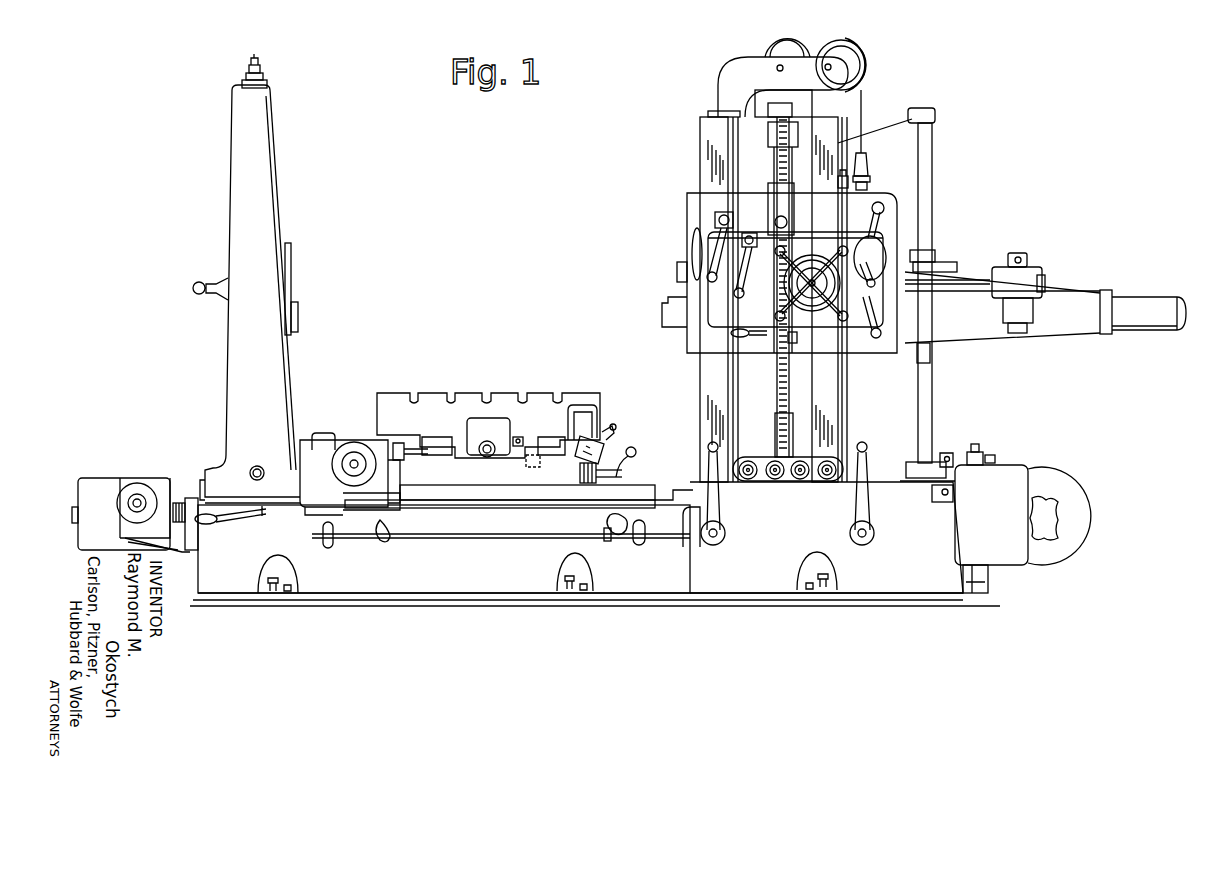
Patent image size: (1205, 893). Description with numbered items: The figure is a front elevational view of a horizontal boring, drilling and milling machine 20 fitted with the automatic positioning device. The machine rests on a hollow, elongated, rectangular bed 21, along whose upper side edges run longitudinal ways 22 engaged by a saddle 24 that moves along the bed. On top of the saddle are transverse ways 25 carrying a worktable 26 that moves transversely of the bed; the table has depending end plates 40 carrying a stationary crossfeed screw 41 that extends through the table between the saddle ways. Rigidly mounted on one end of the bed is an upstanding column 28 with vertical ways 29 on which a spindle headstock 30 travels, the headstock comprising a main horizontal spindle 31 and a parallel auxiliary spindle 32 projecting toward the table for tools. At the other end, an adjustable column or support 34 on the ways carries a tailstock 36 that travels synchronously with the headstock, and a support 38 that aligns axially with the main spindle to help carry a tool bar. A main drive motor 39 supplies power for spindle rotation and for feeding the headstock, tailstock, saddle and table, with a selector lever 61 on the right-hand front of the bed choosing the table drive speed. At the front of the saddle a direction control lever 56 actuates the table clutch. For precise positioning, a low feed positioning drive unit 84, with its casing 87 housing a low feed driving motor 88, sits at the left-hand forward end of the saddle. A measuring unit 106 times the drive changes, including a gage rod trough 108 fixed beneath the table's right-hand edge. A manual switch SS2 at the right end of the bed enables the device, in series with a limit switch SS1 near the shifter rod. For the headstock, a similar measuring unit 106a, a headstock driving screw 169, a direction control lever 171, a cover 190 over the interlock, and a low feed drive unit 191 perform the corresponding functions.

The machine 20 is at (338, 618).
The bed 21 is at (455, 583).
The ways 22 is at (648, 493).
The saddle 24 is at (468, 489).
The ways 25 is at (438, 446).
The worktable 26 is at (538, 393).
The column 28 is at (700, 389).
The ways 29 is at (706, 404).
The spindle headstock 30 is at (690, 214).
The main horizontal spindle 31 is at (666, 306).
The auxiliary spindle 32 is at (677, 270).
The column or support 34 is at (266, 181).
The tailstock 36 is at (292, 262).
The support 38 is at (299, 320).
The main drive motor 39 is at (1083, 498).
The end plates 40 is at (479, 418).
The crossfeed screw 41 is at (497, 438).
The direction control lever 56 is at (636, 453).
The selector lever 61 is at (867, 447).
The low feed positioning drive unit 84 is at (337, 438).
The casing 87 is at (312, 511).
The low feed driving motor 88 is at (334, 462).
The measuring unit 106 is at (610, 427).
The measuring unit 106a is at (764, 214).
The gage rod trough 108 is at (574, 455).
The headstock driving screw 169 is at (786, 396).
The direction control lever 171 is at (827, 480).
The cover 190 is at (1016, 490).
The low feed drive unit 191 is at (141, 476).
The limit switch SS1 is at (528, 468).
The manually operated switch SS2 is at (940, 503).